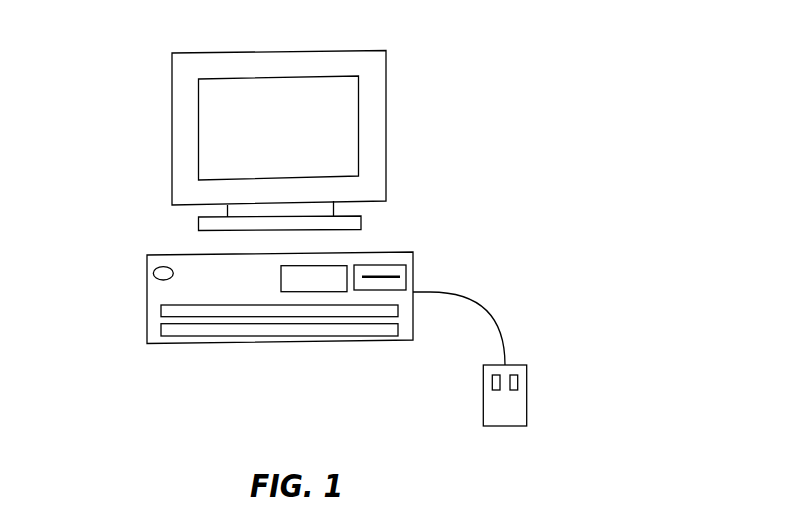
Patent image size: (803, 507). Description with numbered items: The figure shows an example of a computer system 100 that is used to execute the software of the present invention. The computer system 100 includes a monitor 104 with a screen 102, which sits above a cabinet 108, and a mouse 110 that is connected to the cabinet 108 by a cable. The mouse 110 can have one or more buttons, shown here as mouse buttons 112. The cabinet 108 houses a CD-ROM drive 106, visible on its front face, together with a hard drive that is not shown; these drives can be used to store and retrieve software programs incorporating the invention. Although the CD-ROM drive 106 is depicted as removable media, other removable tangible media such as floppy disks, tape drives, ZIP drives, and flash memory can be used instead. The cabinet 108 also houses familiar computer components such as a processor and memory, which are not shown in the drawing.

The computer system 100 is at (571, 47).
The screen 102 is at (233, 103).
The monitor 104 is at (386, 138).
The CD-ROM drive 106 is at (387, 273).
The cabinet 108 is at (166, 256).
The mouse 110 is at (483, 426).
The mouse buttons 112 is at (497, 392).